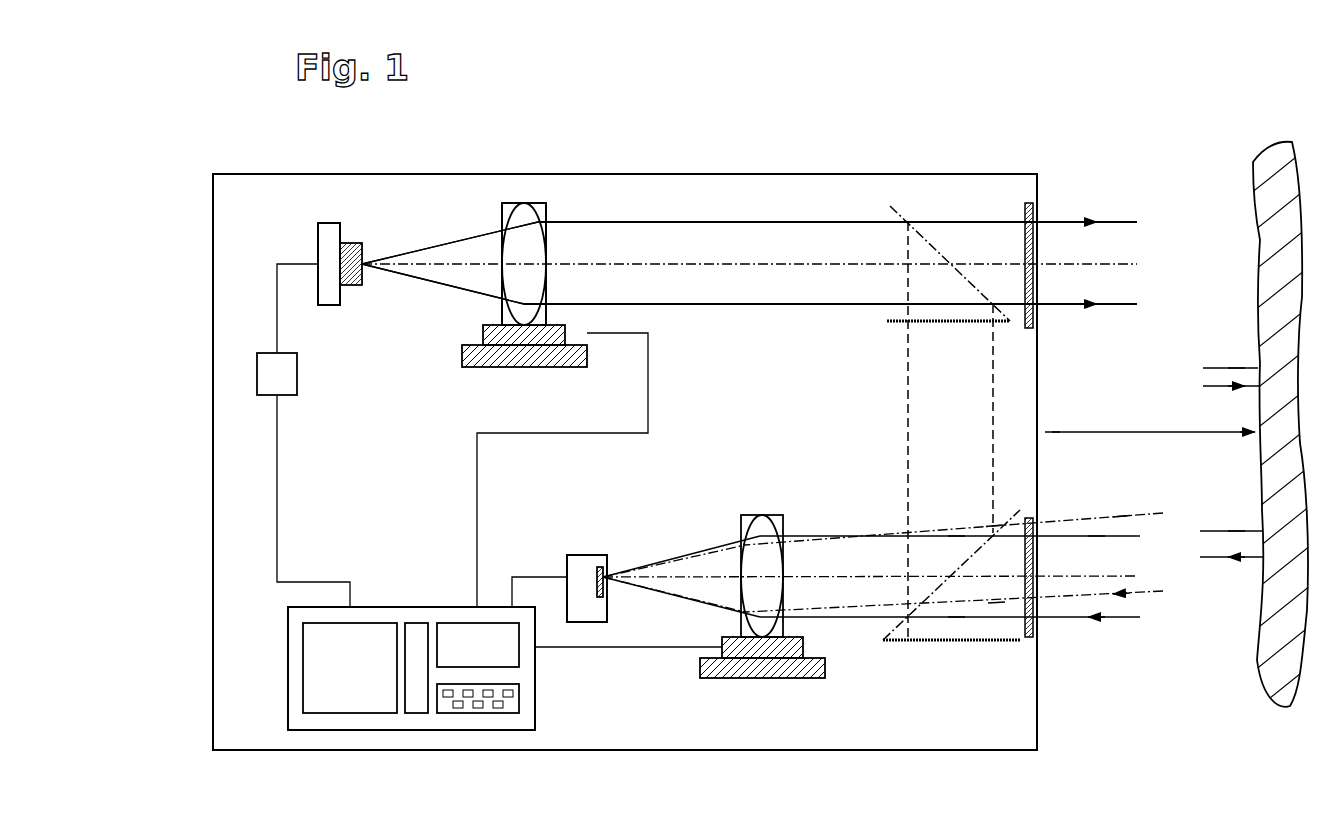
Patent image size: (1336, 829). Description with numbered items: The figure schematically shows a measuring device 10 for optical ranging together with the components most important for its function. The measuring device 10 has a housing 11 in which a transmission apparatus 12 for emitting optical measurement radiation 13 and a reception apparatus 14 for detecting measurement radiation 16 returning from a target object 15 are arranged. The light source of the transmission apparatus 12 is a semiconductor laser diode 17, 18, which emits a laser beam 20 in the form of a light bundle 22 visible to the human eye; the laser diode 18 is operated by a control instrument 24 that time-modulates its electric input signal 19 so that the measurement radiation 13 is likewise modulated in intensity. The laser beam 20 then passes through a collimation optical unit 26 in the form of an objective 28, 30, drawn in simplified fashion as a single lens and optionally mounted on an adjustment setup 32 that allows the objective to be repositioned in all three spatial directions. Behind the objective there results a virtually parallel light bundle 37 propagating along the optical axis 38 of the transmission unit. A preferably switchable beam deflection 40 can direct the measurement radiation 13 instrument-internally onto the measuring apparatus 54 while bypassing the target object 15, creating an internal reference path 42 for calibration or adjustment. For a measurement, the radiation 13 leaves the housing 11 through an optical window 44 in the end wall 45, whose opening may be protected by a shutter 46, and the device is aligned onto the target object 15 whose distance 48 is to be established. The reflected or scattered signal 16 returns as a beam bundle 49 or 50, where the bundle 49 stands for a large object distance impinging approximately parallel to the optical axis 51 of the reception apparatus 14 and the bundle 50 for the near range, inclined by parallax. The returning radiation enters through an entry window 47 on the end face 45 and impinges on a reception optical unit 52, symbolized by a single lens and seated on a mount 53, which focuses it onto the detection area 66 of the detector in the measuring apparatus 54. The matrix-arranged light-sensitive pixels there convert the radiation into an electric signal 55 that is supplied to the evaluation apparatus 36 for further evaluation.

The measuring device 10 is at (290, 128).
The housing 11 is at (843, 192).
The transmission apparatus 12 is at (408, 300).
The optical measurement radiation 13 is at (990, 225).
The reception apparatus 14 is at (675, 548).
The target object 15 is at (1250, 297).
The returning measurement radiation 16 is at (1212, 530).
The laser light source 17 is at (352, 243).
The semiconductor laser diode 18 is at (329, 264).
The electric input signal 19 is at (277, 248).
The laser beam 20 is at (373, 288).
The light bundle 22 is at (472, 245).
The control instrument 24 is at (270, 375).
The collimation optical unit 26 is at (540, 205).
The objective 28 is at (524, 264).
The lens element 30 is at (524, 264).
The adjustment setup 32 is at (480, 333).
The evaluation apparatus 36 is at (414, 720).
The parallel light bundle 37 is at (775, 282).
The optical axis of the transmission unit 38 is at (773, 248).
The beam deflection 40 is at (930, 230).
The instrument-internal reference path 42 is at (993, 425).
The optical window 44 is at (1037, 207).
The end wall 45 is at (1037, 367).
The shutter 46 is at (1012, 325).
The entry window 47 is at (1037, 630).
The distance 48 is at (1152, 432).
The returning beam bundle 49 is at (1122, 607).
The returning beam bundle 50 is at (1123, 575).
The optical axis of the reception apparatus 51 is at (843, 575).
The reception optical unit 52 is at (775, 520).
The receiving lens mount 53 is at (820, 643).
The measuring apparatus 54 is at (590, 565).
The electric signal 55 is at (540, 577).
The detection area 66 is at (588, 600).